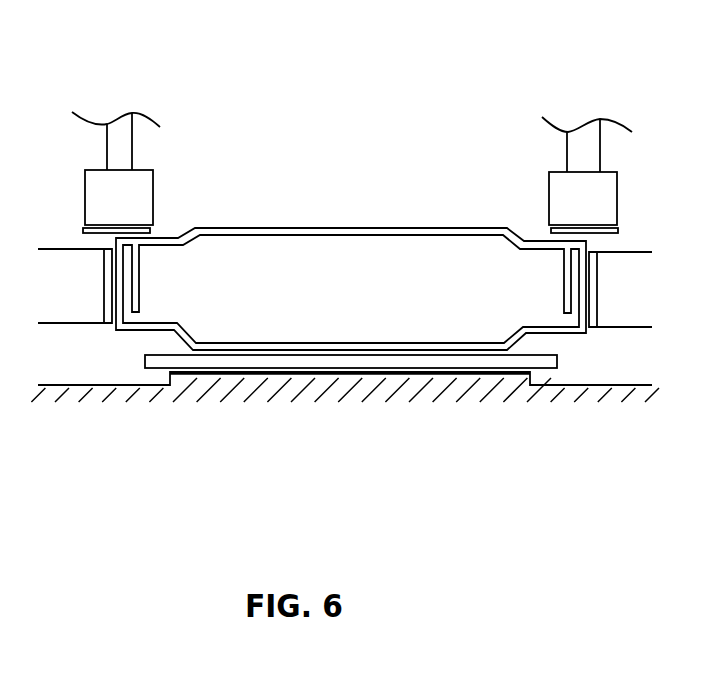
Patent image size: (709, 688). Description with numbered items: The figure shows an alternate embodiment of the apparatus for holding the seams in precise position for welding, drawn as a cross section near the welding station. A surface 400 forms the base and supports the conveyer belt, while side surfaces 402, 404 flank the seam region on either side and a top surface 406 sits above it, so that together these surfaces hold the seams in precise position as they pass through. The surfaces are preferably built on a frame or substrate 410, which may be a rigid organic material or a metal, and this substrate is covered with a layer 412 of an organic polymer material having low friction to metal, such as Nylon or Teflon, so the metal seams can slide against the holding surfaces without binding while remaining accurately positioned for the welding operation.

The surface 400 is at (345, 425).
The side surface 402 is at (93, 297).
The side surface 404 is at (657, 300).
The top surface 406 is at (147, 213).
The frame or substrate 410 is at (609, 215).
The layer 412 is at (93, 225).